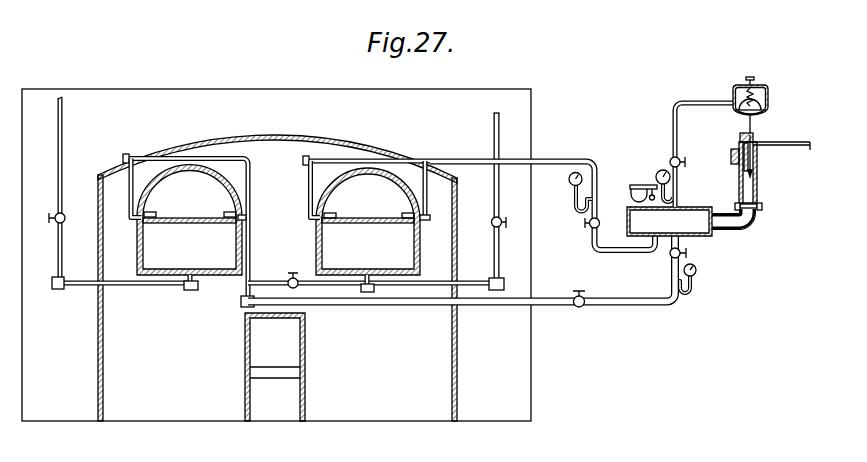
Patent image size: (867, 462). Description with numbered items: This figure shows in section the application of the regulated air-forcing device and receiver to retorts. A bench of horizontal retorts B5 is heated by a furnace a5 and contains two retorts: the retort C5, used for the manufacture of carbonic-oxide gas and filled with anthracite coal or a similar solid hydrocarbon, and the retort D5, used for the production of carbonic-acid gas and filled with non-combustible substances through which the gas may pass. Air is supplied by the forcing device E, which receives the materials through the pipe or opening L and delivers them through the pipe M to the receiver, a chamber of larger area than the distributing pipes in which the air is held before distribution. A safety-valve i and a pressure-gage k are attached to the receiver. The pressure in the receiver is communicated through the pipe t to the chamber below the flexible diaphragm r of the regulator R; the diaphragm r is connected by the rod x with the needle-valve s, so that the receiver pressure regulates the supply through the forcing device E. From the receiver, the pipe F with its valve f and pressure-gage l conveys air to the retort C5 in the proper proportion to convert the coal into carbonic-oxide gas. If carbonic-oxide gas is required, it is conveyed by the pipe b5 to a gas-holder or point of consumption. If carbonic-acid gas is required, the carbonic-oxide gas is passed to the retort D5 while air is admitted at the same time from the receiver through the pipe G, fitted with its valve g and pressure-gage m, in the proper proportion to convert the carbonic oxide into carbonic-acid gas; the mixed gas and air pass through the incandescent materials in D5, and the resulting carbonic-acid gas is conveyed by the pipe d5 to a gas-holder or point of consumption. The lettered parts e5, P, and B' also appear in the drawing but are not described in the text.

The bench of horizontal retorts B5 is at (276, 245).
The pipe d5 is at (125, 290).
The retort D5 is at (189, 227).
The pipe e5 is at (251, 269).
The retort C5 is at (366, 224).
The furnace a5 is at (275, 367).
The pipe b5 is at (432, 279).
The pipe G is at (370, 305).
The pipe F is at (599, 255).
The pressure-gage l is at (569, 178).
The valve f is at (598, 224).
The pipe M is at (687, 229).
The safety-valve i is at (634, 186).
The pressure-gage k is at (660, 170).
The pipe t is at (678, 145).
The valve g is at (668, 255).
The pressure-gage m is at (697, 271).
The regulating device R is at (768, 102).
The rod x is at (746, 115).
The flexible diaphragm r is at (755, 116).
The forcing device E is at (756, 195).
The pipe or opening L is at (725, 157).
The piston P is at (742, 170).
The needle-valve s is at (747, 176).
The plate B' is at (775, 150).